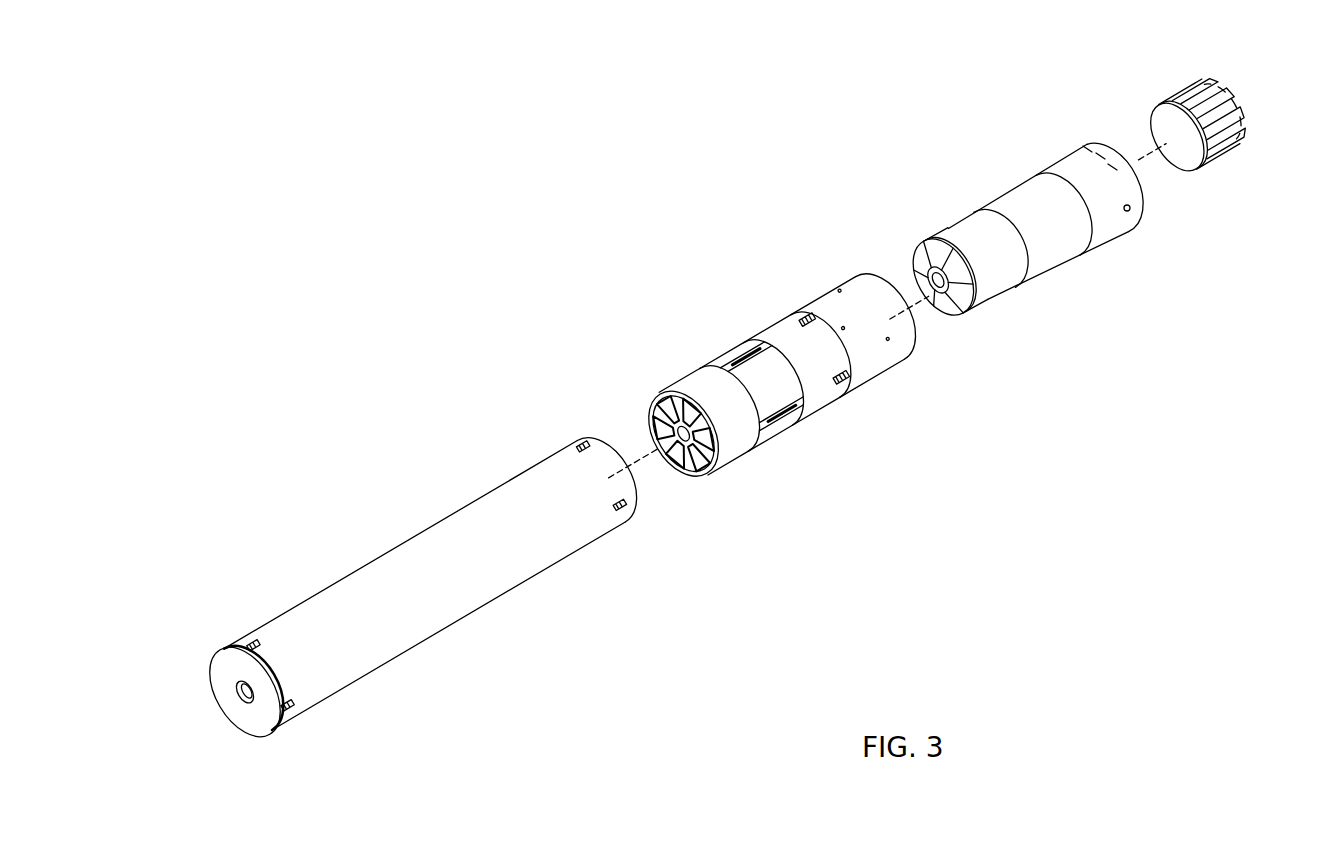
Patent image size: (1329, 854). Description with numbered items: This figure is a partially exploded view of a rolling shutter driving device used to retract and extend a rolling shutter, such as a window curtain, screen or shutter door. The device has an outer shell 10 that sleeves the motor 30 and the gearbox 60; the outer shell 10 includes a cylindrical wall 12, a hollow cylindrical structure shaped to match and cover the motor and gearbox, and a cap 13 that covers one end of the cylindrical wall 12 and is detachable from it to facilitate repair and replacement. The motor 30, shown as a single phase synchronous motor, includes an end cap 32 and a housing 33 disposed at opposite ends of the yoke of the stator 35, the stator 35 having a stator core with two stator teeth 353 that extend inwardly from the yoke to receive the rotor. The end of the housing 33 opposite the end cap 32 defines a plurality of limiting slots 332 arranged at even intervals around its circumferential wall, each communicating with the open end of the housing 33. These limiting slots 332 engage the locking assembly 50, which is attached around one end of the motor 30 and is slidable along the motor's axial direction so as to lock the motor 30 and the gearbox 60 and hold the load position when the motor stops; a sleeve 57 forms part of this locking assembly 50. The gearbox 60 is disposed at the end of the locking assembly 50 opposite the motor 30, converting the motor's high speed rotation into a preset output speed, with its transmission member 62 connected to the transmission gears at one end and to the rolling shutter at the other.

The outer shell 10 is at (403, 592).
The cylindrical wall 12 is at (535, 568).
The cap 13 is at (250, 720).
The motor 30 is at (794, 374).
The end cap 32 is at (718, 452).
The housing 33 is at (777, 340).
The stator 35 is at (770, 427).
The stator teeth 353 is at (800, 310).
The limiting slots 332 is at (845, 388).
The locking assembly 50 is at (895, 336).
The sleeve 57 is at (873, 362).
The gearbox 60 is at (1060, 245).
The transmission member 62 is at (1228, 150).